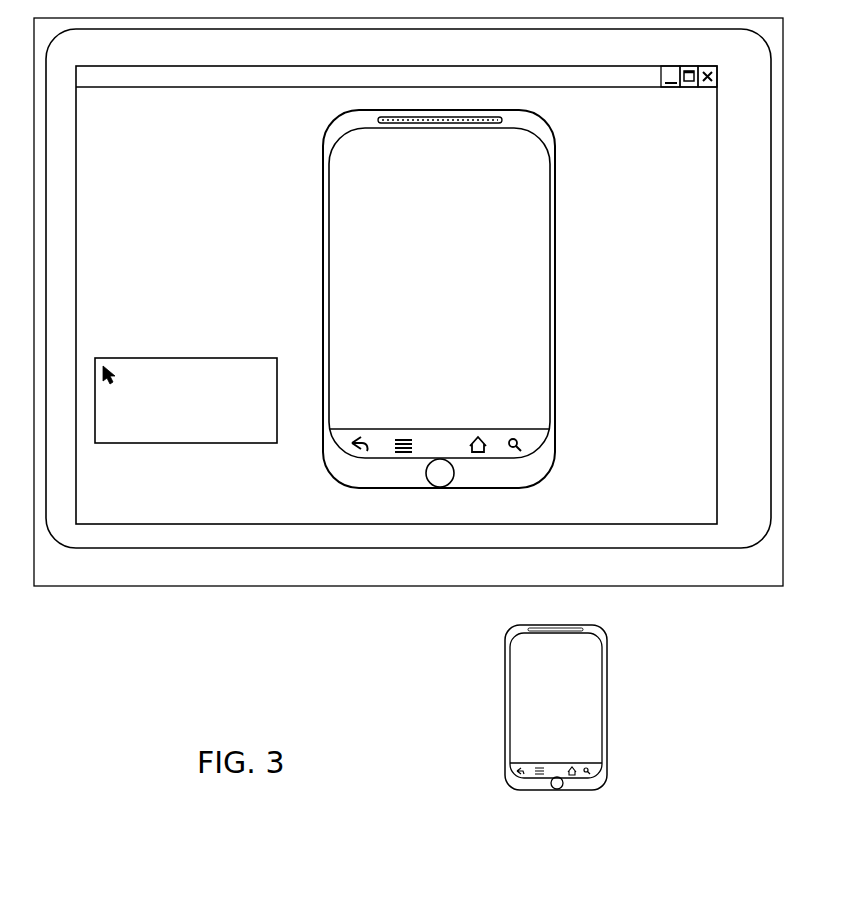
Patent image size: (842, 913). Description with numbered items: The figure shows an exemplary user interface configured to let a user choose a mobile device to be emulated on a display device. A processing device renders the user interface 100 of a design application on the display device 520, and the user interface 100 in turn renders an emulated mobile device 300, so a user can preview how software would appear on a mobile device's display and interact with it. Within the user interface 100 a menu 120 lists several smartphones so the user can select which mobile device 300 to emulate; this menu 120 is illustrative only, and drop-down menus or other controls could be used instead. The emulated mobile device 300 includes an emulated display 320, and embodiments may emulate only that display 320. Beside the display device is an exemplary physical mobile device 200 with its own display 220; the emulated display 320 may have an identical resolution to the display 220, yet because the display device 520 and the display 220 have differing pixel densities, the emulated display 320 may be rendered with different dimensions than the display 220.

The user interface 100 is at (650, 524).
The menu 120 is at (217, 443).
The mobile device 200 is at (492, 707).
The display 220 is at (530, 717).
The emulated mobile device 300 is at (445, 377).
The emulated display 320 is at (523, 357).
The display device 520 is at (603, 586).